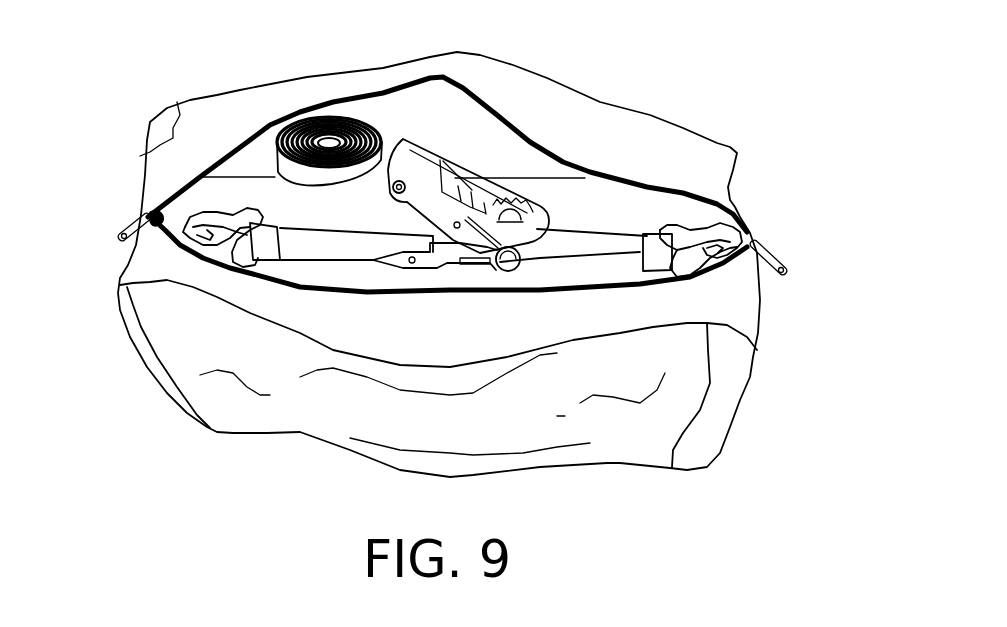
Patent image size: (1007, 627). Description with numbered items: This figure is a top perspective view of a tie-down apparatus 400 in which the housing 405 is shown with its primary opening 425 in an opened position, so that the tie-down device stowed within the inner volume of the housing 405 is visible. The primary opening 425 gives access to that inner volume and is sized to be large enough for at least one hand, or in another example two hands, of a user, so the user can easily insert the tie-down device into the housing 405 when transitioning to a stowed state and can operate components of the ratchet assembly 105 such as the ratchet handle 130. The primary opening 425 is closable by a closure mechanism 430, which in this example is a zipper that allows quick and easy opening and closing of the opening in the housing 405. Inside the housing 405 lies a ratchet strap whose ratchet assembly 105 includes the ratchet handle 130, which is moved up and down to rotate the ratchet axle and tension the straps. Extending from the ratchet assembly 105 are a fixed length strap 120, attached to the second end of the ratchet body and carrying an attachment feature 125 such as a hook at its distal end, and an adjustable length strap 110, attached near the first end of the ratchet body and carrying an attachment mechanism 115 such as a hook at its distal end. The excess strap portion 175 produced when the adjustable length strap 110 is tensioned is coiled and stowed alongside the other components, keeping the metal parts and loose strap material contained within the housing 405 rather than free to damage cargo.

The tie-down apparatus 400 is at (778, 48).
The housing 405 is at (720, 150).
The primary opening 425 is at (665, 185).
The closure mechanism 430 is at (131, 231).
The excess strap portion 175 is at (313, 125).
The fixed length strap 120 is at (320, 250).
The attachment feature 125 is at (200, 212).
The ratchet assembly 105 is at (455, 140).
The ratchet handle 130 is at (399, 175).
The adjustable length strap 110 is at (580, 237).
The attachment mechanism 115 is at (717, 227).